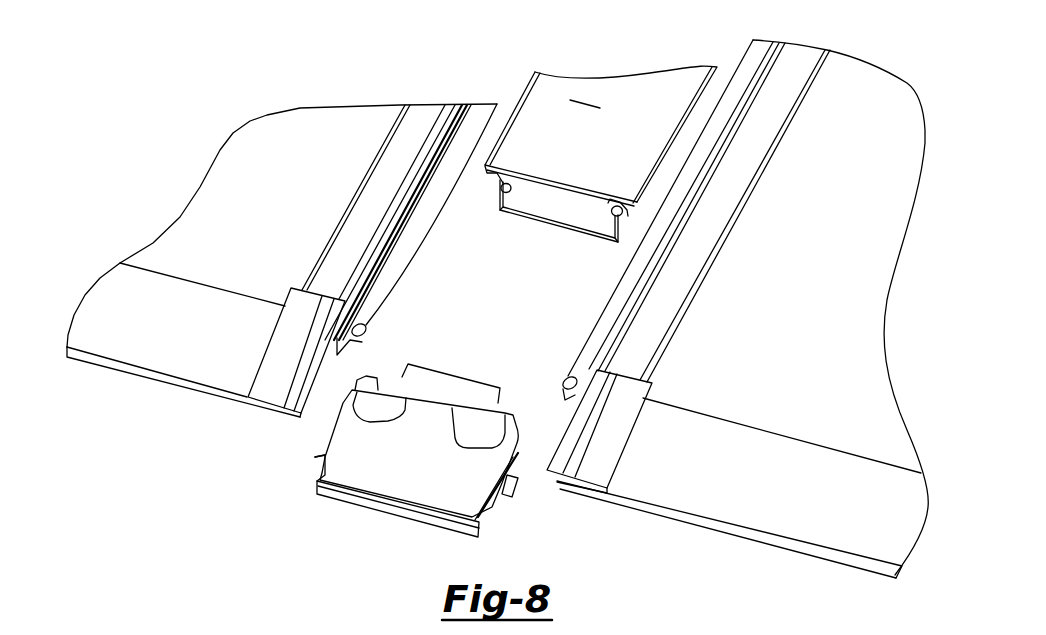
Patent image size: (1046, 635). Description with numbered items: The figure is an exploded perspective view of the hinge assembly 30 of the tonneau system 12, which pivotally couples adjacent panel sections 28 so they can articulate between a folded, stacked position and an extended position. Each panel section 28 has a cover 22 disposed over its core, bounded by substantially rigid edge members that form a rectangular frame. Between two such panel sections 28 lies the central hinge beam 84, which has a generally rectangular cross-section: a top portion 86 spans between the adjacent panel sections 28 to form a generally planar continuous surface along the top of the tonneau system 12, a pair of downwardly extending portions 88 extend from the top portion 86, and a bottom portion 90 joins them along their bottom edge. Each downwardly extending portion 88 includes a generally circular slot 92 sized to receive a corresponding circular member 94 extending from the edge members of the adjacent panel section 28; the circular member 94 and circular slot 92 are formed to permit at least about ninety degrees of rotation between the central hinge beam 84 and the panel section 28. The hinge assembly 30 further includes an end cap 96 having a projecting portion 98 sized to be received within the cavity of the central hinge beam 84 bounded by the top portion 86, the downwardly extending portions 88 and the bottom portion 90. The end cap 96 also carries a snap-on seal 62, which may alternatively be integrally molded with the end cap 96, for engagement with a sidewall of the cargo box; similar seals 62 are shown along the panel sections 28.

The tonneau system 12 is at (193, 468).
The cover 22 is at (878, 97).
The panel section 28 is at (347, 132).
The hinge assembly 30 is at (286, 463).
The snap-on seal 62 is at (174, 388).
The central hinge beam 84 is at (608, 92).
The top portion 86 is at (598, 143).
The downwardly extending portions 88 is at (497, 203).
The bottom portion 90 is at (538, 222).
The circular slot 92 is at (483, 187).
The circular member 94 is at (382, 307).
The end cap 96 is at (327, 430).
The projecting portion 98 is at (457, 383).